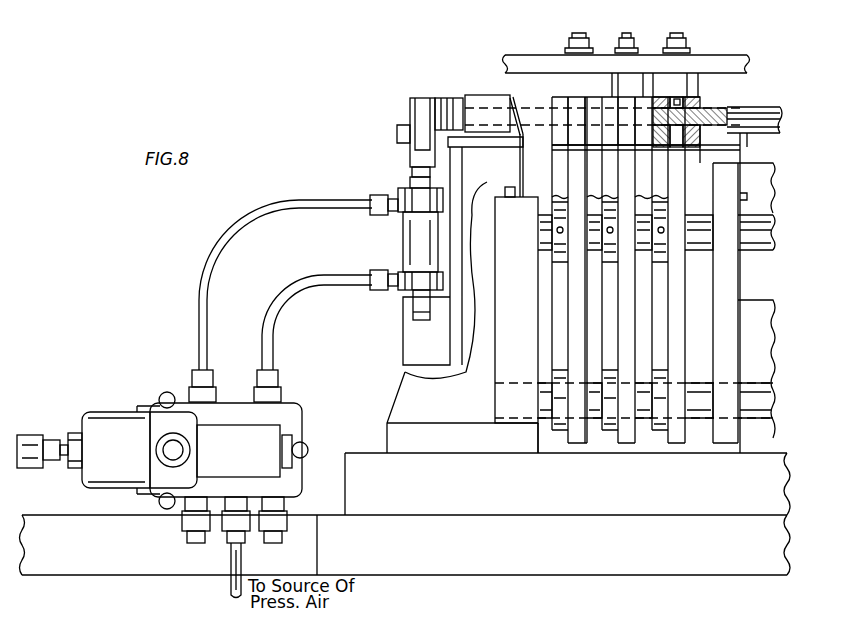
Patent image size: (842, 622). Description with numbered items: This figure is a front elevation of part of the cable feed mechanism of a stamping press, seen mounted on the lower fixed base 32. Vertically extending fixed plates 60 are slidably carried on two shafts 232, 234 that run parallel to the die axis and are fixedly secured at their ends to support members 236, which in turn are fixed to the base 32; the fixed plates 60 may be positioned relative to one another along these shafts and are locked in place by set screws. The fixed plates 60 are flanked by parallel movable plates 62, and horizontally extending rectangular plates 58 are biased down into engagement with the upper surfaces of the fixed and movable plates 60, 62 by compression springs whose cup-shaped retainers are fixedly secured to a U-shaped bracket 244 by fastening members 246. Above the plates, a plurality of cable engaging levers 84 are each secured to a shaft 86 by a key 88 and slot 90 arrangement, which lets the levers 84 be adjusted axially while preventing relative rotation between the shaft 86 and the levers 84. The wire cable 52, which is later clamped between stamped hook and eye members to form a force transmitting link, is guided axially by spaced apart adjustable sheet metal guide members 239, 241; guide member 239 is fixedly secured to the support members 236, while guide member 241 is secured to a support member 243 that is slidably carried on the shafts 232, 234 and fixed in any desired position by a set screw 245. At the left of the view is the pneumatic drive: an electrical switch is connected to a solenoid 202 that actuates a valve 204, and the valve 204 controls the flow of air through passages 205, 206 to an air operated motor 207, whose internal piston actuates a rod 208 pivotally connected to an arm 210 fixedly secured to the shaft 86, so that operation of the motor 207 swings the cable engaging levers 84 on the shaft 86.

The lower fixed base 32 is at (647, 562).
The wire cable 52 is at (534, 152).
The rectangular plates 58 is at (600, 76).
The fixed plates 60 is at (578, 298).
The movable plates 62 is at (690, 180).
The cable engaging levers 84 is at (675, 97).
The shaft 86 is at (745, 118).
The key 88 is at (663, 97).
The slot 90 is at (722, 110).
The solenoid 202 is at (128, 461).
The valve 204 is at (248, 461).
The passage 205 is at (242, 236).
The passage 206 is at (283, 308).
The air operated motor 207 is at (400, 245).
The rod 208 is at (410, 155).
The arm 210 is at (420, 98).
The shaft 232 is at (757, 218).
The shaft 234 is at (754, 393).
The support members 236 is at (534, 338).
The sheet metal guide member 239 is at (513, 96).
The sheet metal guide member 241 is at (742, 150).
The support member 243 is at (728, 270).
The U-shaped bracket 244 is at (533, 62).
The set screw 245 is at (726, 236).
The fastening members 246 is at (622, 46).